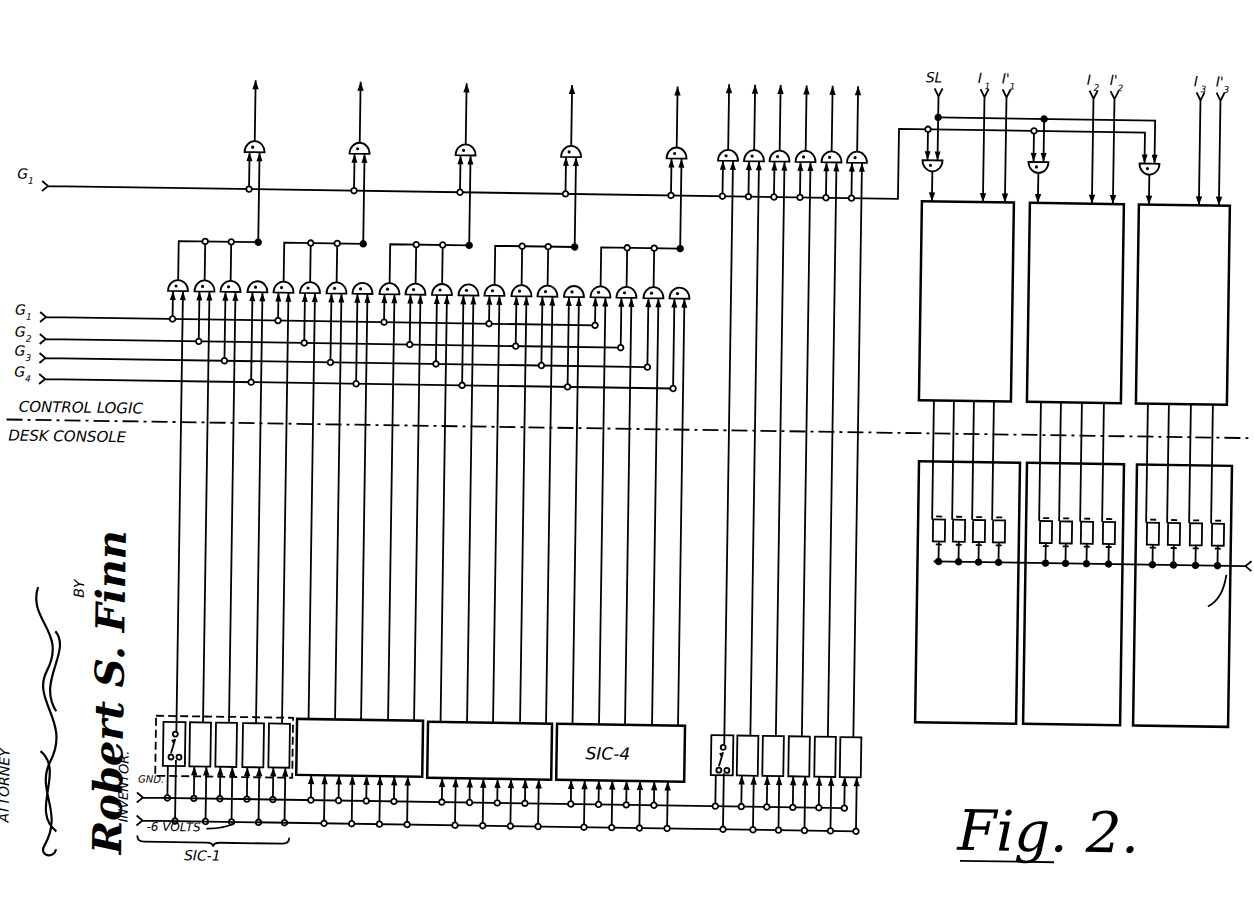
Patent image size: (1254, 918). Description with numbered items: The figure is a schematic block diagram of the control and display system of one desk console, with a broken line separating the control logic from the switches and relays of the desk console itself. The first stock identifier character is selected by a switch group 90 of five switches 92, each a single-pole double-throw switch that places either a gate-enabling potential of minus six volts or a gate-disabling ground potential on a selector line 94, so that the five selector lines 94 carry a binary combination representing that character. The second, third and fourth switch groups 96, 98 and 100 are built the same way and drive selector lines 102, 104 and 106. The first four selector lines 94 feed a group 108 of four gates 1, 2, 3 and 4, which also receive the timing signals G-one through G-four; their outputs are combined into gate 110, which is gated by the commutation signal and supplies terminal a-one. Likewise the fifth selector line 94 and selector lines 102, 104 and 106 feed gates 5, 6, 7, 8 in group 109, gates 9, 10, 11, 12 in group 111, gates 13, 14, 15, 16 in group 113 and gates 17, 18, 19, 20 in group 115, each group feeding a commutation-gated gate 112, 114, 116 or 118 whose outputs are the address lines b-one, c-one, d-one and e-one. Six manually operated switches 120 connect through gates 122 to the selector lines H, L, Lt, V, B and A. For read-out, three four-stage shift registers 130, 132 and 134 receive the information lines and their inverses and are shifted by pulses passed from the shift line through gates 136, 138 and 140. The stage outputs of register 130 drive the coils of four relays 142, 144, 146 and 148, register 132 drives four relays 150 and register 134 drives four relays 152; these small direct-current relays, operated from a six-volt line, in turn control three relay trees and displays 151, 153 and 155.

The switch group 90 is at (167, 727).
The switch 92 is at (226, 728).
The selector line 94 is at (180, 503).
The second switch group 96 is at (326, 723).
The third switch group 98 is at (452, 724).
The fourth switch group 100 is at (683, 806).
The selector lines 102 is at (339, 590).
The selector lines 104 is at (471, 566).
The selector lines 106 is at (576, 566).
The group of four gates 108 is at (186, 311).
The gate group 109 is at (321, 296).
The gate 110 is at (258, 152).
The gate group 111 is at (427, 298).
The gate 112 is at (363, 152).
The gate group 113 is at (530, 300).
The gate 114 is at (469, 153).
The gate group 115 is at (636, 301).
The gate 116 is at (575, 155).
The gate 118 is at (663, 168).
The manually operated switches 120 is at (716, 734).
The gates 122 is at (717, 158).
The shift register 130 is at (985, 378).
The shift register 132 is at (1095, 378).
The shift register 134 is at (1198, 378).
The gate 136 is at (937, 164).
The gate 138 is at (1043, 164).
The gate 140 is at (1154, 164).
The relay 142 is at (940, 540).
The relay 144 is at (953, 563).
The relay 146 is at (984, 563).
The relay 148 is at (1000, 515).
The relays 150 is at (1090, 563).
The relay tree and display 151 is at (969, 574).
The relays 152 is at (1172, 565).
The relay tree and display 153 is at (1074, 577).
The relay tree and display 155 is at (1183, 578).
The gate 1 is at (176, 293).
The gate 2 is at (202, 304).
The gate 3 is at (227, 315).
The gate 4 is at (255, 325).
The gate 5 is at (281, 294).
The gate 6 is at (307, 306).
The gate 7 is at (333, 316).
The gate 8 is at (360, 327).
The gate 9 is at (387, 296).
The gate 10 is at (412, 307).
The gate 11 is at (438, 318).
The gate 12 is at (464, 328).
The gate 13 is at (491, 298).
The gate 14 is at (518, 309).
The gate 15 is at (543, 319).
The gate 16 is at (570, 330).
The gate 17 is at (597, 299).
The gate 18 is at (623, 311).
The gate 19 is at (649, 321).
The gate 20 is at (675, 331).